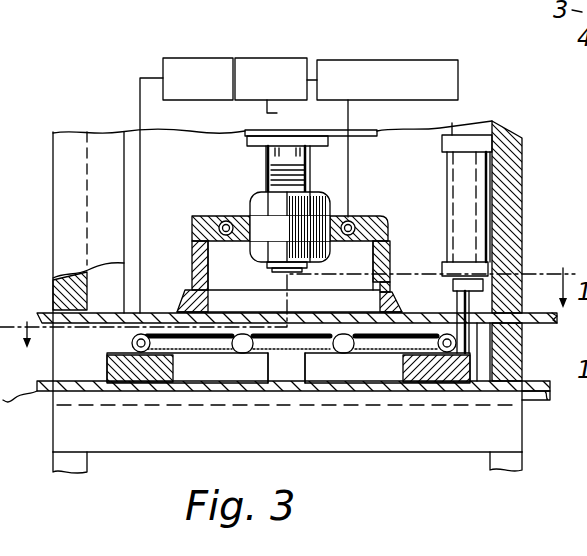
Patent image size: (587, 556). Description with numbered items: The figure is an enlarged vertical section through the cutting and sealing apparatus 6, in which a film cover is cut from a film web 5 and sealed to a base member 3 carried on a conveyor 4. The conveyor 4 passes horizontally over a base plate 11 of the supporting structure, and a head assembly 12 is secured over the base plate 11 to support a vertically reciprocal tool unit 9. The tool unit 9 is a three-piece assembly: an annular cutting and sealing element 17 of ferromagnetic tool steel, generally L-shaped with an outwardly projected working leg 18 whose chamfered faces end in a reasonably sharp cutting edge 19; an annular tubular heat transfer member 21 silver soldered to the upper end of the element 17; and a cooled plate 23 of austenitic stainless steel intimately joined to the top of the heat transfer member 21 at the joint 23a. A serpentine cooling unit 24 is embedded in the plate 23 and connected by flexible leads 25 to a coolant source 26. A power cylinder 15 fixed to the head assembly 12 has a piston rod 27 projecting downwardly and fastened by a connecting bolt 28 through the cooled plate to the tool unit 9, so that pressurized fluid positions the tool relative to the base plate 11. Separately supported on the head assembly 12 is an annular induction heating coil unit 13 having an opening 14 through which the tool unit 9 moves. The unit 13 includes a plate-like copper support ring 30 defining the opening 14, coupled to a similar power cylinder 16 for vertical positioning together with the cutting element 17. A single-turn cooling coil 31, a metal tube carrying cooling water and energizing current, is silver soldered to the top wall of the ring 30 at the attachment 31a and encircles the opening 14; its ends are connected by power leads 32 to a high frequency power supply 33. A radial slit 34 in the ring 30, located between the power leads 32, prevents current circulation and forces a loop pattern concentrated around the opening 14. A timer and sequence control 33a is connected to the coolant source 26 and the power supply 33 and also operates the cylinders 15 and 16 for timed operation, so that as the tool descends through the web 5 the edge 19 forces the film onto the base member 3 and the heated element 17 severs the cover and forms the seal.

The base member 3 is at (295, 397).
The conveyor 4 is at (543, 430).
The film web 5 is at (147, 310).
The cutting and sealing apparatus 6 is at (194, 189).
The tool unit 9 is at (398, 186).
The base plate 11 is at (250, 440).
The head assembly 12 is at (60, 177).
The induction heating coil unit 13 is at (202, 395).
The opening 14 is at (345, 398).
The power cylinder 15 is at (350, 137).
The power cylinder 16 is at (482, 206).
The cutting and sealing element 17 is at (400, 285).
The working leg 18 is at (400, 294).
The cutting edge 19 is at (403, 313).
The heat transfer member 21 is at (192, 252).
The cooled plate 23 is at (388, 229).
The joint 23a is at (212, 245).
The cooling unit 24 is at (353, 221).
The flexible leads 25 is at (288, 114).
The coolant source 26 is at (408, 46).
The piston rod 27 is at (252, 146).
The connecting bolt 28 is at (306, 160).
The support ring 30 is at (467, 370).
The cooling coil 31 is at (327, 338).
The soldered attachment 31a is at (128, 341).
The power leads 32 is at (136, 104).
The high frequency power supply 33 is at (212, 44).
The timer and sequence control 33a is at (300, 46).
The slit 34 is at (306, 355).